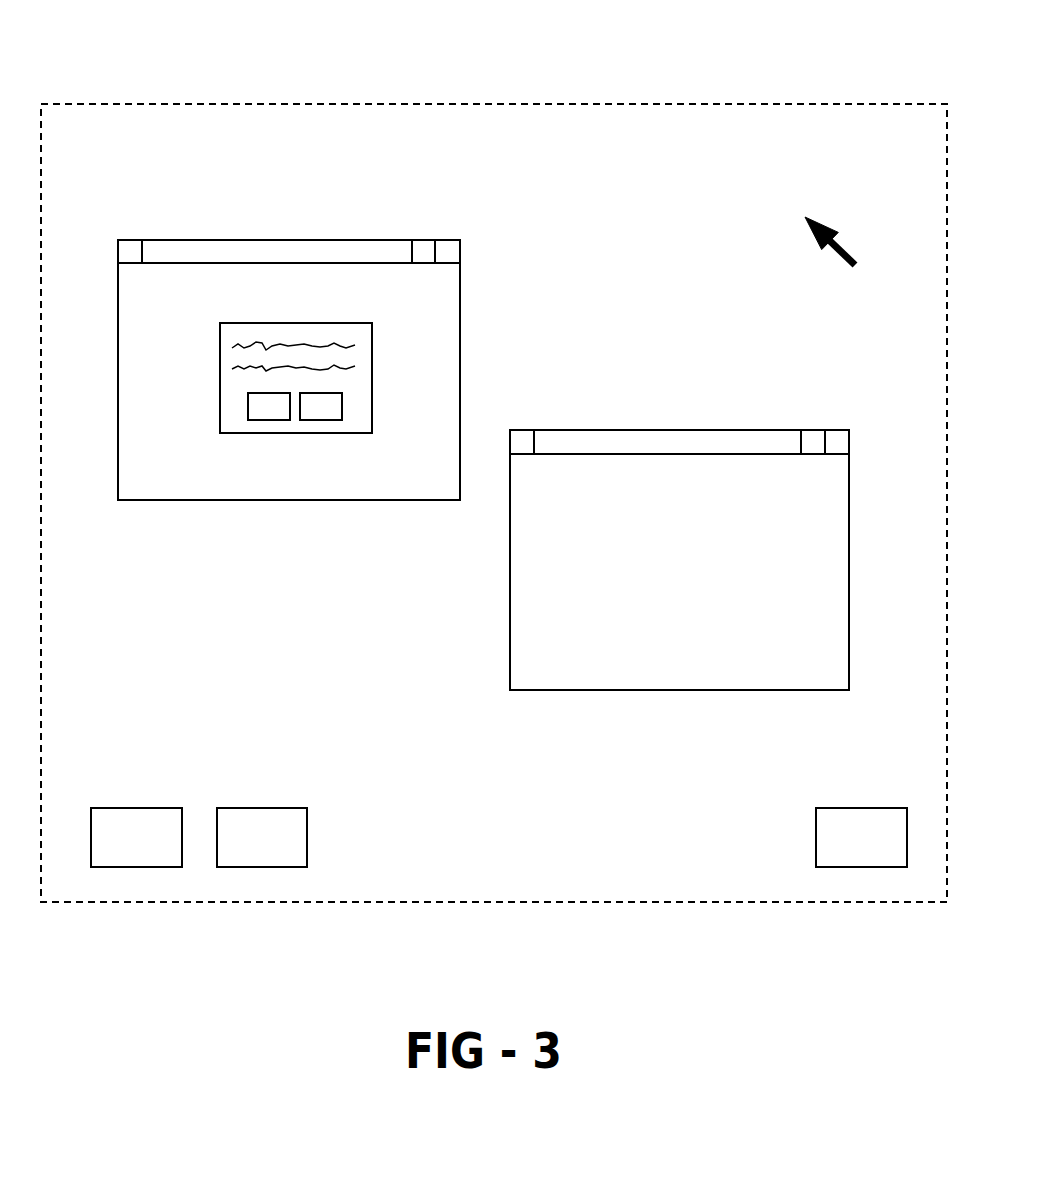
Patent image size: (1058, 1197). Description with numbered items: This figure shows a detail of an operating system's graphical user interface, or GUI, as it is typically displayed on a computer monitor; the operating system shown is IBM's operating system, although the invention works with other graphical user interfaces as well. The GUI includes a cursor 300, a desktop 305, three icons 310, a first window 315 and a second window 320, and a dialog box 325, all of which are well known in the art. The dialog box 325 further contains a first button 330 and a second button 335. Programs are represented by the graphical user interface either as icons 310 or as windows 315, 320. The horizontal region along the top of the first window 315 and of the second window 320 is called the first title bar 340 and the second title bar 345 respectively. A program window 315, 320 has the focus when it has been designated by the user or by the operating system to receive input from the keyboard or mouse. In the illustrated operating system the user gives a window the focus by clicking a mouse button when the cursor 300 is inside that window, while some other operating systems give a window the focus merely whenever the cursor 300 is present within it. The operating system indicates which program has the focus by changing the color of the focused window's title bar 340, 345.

The cursor 300 is at (837, 243).
The desktop 305 is at (327, 102).
The icons 310 is at (275, 808).
The first window 315 is at (849, 567).
The second window 320 is at (118, 440).
The dialog box 325 is at (217, 365).
The first button 330 is at (270, 413).
The second button 335 is at (320, 413).
The first title bar 340 is at (127, 253).
The second title bar 345 is at (838, 440).